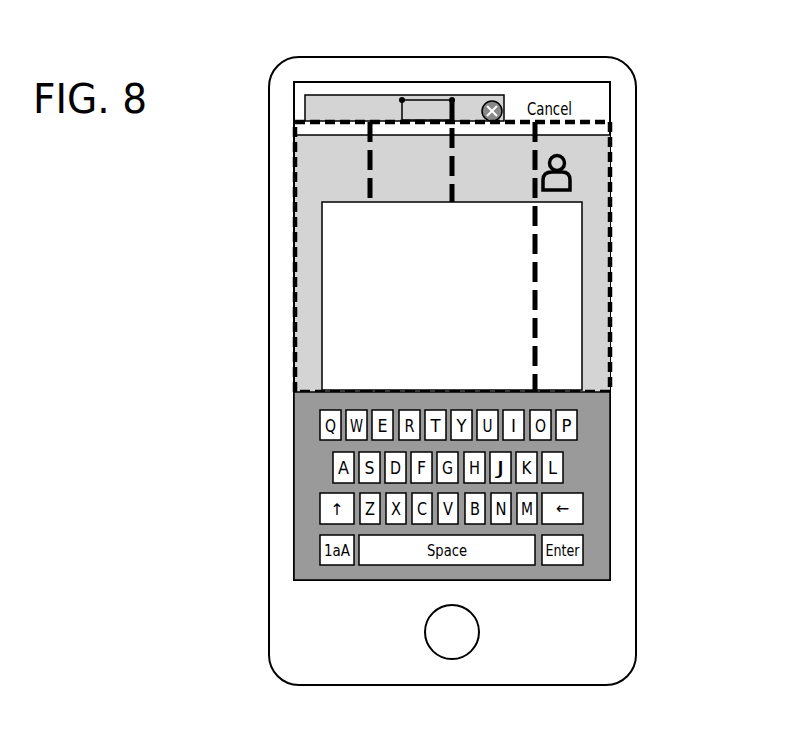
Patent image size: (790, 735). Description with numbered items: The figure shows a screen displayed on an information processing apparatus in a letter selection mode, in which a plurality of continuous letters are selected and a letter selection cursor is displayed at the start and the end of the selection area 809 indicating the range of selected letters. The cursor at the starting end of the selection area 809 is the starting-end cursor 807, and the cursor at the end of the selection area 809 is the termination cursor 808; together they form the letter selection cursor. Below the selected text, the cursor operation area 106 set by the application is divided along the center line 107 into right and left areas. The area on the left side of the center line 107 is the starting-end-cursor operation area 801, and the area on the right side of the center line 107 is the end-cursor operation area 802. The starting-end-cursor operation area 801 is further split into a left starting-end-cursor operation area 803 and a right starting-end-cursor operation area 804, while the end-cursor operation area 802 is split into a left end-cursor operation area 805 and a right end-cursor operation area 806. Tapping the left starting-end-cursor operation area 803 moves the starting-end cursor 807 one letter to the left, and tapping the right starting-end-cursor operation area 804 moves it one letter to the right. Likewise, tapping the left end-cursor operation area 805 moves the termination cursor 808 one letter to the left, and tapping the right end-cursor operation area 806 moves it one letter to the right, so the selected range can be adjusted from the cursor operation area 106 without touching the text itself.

The cursor operation area 106 is at (612, 262).
The center line 107 is at (502, 157).
The starting-end-cursor operation area 801 is at (307, 148).
The end-cursor operation area 802 is at (508, 142).
The left starting-end-cursor operation area 803 is at (328, 201).
The right starting-end-cursor operation area 804 is at (393, 306).
The left end-cursor operation area 805 is at (510, 215).
The right end-cursor operation area 806 is at (567, 317).
The starting-end cursor 807 is at (402, 98).
The termination cursor 808 is at (463, 110).
The selection area 809 is at (433, 103).